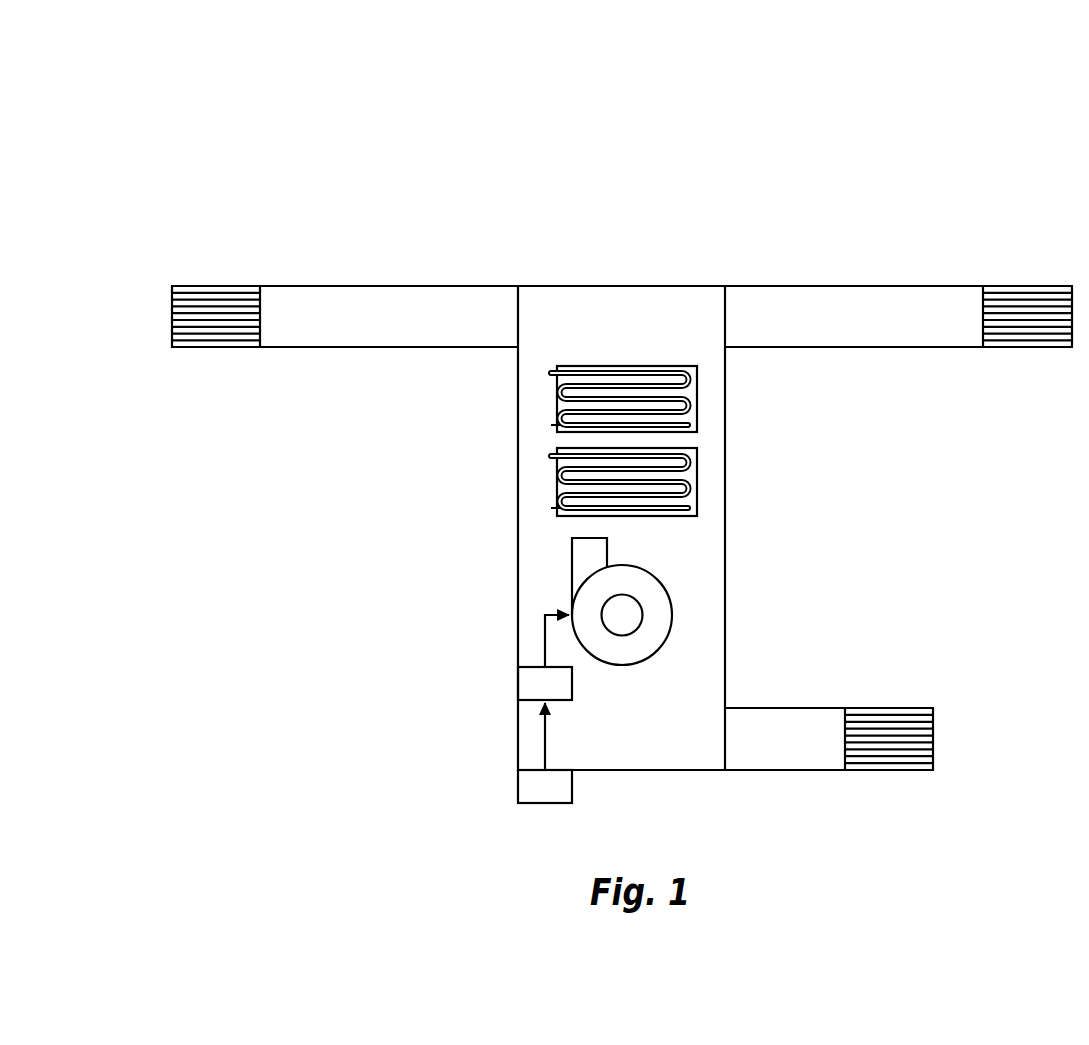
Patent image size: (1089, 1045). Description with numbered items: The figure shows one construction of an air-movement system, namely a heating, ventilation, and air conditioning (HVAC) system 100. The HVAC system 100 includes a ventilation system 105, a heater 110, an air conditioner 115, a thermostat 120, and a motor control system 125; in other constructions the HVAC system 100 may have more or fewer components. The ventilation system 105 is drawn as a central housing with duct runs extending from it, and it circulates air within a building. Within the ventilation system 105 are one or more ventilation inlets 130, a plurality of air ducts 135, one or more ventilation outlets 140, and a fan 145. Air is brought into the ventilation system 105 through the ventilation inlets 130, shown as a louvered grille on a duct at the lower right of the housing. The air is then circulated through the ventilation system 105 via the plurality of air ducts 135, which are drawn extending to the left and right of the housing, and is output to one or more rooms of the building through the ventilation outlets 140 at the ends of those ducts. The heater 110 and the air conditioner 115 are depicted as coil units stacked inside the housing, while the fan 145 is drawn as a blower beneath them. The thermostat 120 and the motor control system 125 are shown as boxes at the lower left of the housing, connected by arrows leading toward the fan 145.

The HVAC system 100 is at (201, 126).
The ventilation system 105 is at (572, 229).
The heater 110 is at (697, 470).
The air conditioner 115 is at (697, 370).
The thermostat 120 is at (518, 783).
The motor control system 125 is at (518, 680).
The ventilation inlet 130 is at (873, 708).
The air ducts 135 is at (415, 286).
The ventilation outlet 140 is at (207, 286).
The fan 145 is at (570, 611).